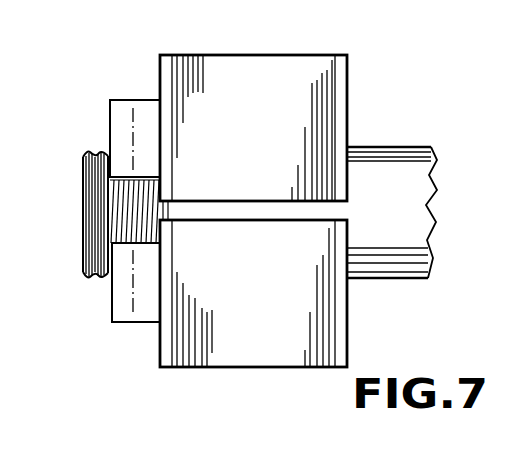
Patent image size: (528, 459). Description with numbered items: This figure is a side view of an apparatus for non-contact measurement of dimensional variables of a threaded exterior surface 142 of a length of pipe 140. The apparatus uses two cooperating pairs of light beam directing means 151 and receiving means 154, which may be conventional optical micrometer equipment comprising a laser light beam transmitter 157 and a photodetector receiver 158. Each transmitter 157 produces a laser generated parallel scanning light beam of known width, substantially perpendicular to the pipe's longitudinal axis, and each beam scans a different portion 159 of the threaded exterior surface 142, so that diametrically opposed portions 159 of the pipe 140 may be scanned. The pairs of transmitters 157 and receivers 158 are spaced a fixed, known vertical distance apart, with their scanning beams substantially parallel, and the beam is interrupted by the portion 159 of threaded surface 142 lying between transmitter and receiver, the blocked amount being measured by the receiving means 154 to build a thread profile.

The length of pipe 140 is at (392, 148).
The threaded exterior surface 142 is at (90, 152).
The light beam directing means 151 is at (140, 100).
The receiving means 154 is at (132, 322).
The laser light beam transmitter 157 is at (225, 77).
The photodetector receiver 158 is at (237, 342).
The portion of threaded surface 159 is at (199, 449).